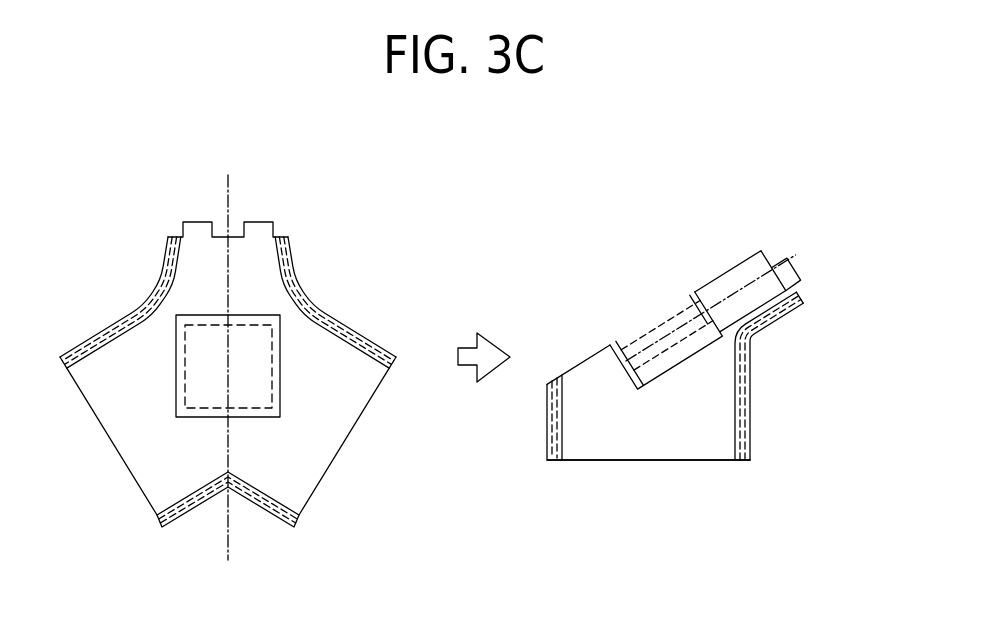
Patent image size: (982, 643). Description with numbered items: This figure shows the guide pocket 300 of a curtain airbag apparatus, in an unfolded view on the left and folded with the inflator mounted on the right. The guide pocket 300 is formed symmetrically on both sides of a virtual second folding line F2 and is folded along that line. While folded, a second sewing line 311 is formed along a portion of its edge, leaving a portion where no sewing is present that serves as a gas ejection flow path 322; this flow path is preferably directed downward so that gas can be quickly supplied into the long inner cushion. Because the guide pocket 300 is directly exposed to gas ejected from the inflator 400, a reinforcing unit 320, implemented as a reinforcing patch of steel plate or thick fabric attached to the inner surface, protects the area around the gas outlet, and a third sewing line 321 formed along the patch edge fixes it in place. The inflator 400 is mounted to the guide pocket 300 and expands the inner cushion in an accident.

The guide pocket 300 is at (327, 489).
The second sewing line 311 is at (348, 326).
The reinforcing unit 320 is at (280, 399).
The third sewing line 321 is at (272, 372).
The gas ejection flow path 322 is at (645, 460).
The inflator 400 is at (752, 285).
The second folding line F2 is at (229, 186).